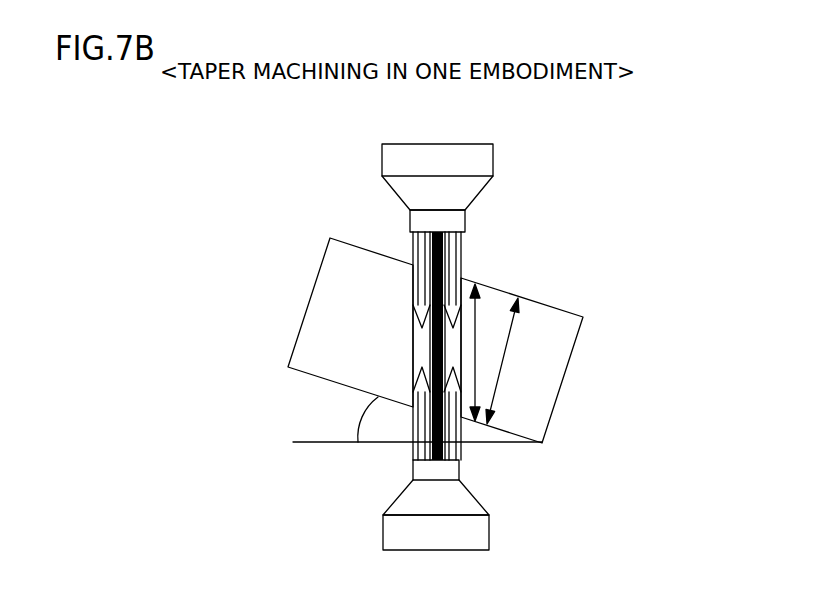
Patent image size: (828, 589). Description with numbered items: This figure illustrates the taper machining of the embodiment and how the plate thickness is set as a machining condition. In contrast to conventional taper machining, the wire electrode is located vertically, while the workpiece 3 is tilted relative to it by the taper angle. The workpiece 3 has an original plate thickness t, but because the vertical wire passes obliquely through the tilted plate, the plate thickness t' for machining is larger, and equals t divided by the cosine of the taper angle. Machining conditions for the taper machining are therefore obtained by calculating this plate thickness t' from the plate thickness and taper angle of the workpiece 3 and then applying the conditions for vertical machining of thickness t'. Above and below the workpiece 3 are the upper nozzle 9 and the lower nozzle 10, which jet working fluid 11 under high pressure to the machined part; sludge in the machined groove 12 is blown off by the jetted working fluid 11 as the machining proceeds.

The upper nozzle 9 is at (493, 147).
The lower nozzle 10 is at (490, 523).
The working fluid 11 is at (417, 255).
The machined groove 12 is at (418, 340).
The workpiece 3 is at (565, 377).
The plate thickness for machining t' is at (520, 305).
The original plate thickness t is at (561, 343).